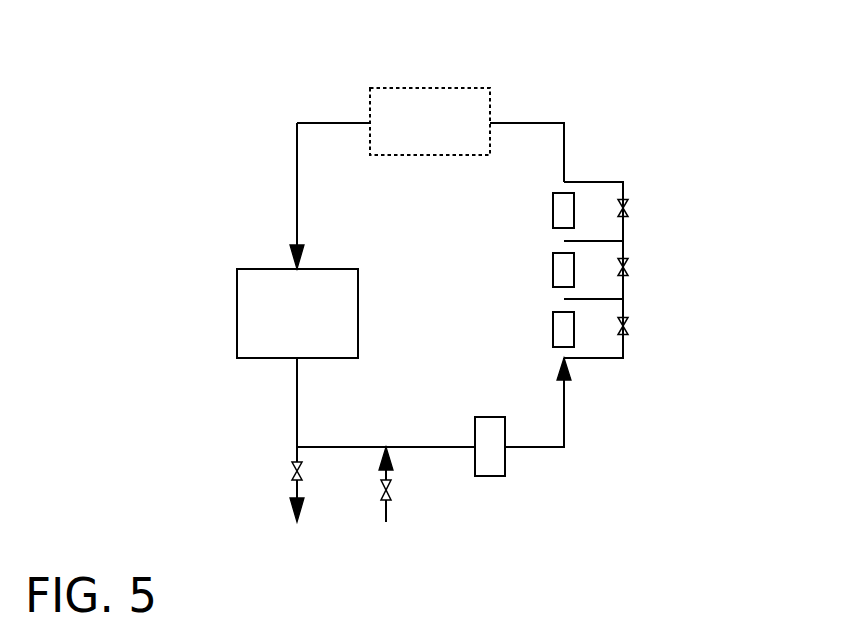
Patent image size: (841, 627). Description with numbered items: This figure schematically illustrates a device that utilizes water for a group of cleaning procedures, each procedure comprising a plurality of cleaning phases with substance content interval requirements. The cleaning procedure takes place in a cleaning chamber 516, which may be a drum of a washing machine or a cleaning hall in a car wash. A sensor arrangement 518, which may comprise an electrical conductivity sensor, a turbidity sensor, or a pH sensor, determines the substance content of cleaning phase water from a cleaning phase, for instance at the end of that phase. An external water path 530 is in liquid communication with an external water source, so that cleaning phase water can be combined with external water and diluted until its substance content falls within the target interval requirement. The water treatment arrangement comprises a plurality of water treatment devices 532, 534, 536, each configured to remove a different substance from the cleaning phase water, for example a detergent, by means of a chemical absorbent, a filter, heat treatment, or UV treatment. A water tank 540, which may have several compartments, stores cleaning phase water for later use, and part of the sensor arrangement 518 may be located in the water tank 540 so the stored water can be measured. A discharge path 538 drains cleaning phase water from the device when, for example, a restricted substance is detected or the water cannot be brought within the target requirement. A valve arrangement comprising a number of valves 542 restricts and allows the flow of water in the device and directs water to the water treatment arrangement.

The cleaning chamber 516 is at (237, 310).
The sensor arrangement 518 is at (505, 461).
The external water path 530 is at (387, 512).
The water treatment device 532 is at (553, 335).
The water treatment device 534 is at (553, 270).
The water treatment device 536 is at (553, 212).
The discharge path 538 is at (295, 490).
The water tank 540 is at (414, 88).
The valves 542 is at (628, 208).